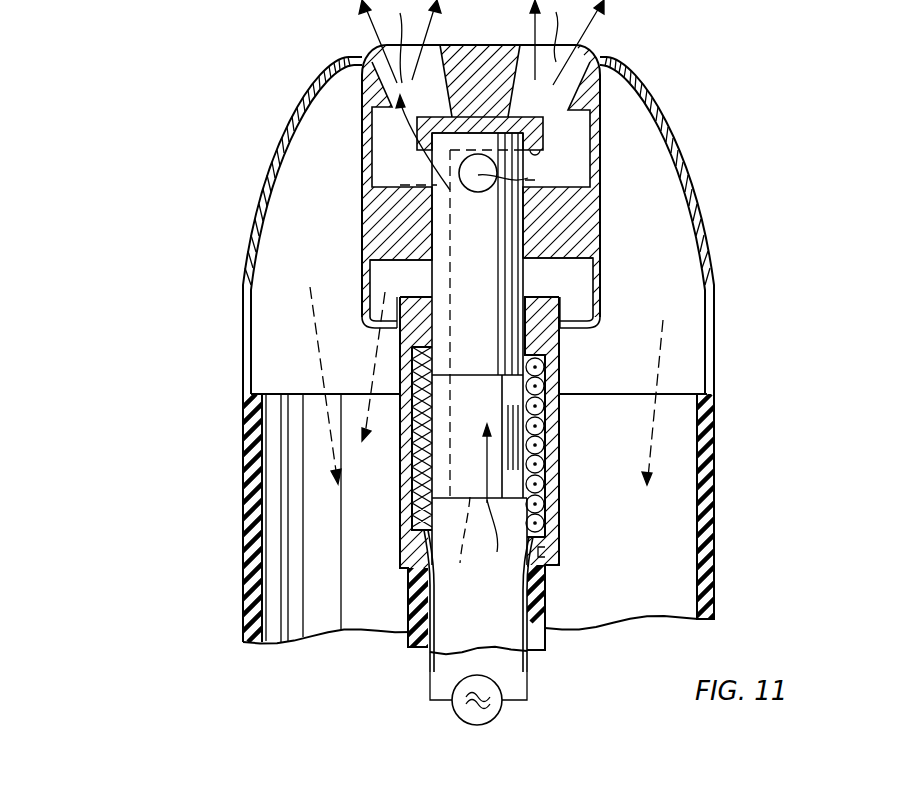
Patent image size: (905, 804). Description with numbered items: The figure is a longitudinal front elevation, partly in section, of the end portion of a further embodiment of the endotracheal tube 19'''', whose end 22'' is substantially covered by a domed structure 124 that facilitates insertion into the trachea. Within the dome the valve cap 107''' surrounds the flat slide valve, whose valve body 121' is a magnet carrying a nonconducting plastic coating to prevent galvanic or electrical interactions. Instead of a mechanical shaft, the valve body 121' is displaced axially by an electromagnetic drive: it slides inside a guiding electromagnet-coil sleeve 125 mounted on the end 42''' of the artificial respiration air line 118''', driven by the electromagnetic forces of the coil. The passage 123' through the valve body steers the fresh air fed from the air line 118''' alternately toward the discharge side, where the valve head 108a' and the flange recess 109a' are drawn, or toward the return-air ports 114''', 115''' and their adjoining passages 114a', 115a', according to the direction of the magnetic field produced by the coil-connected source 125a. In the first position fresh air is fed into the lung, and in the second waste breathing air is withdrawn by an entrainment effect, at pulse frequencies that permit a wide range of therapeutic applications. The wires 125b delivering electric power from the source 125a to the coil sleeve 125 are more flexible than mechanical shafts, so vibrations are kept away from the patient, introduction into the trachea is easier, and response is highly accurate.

The valve cap body 107''' is at (521, 181).
The valve head 108a' is at (481, 111).
The flange recess 109a' is at (604, 148).
The return-air port 114''' is at (362, 338).
The left air passage 114a' is at (364, 288).
The return-air port 115''' is at (601, 342).
The right air passage 115a' is at (604, 288).
The artificial respiration air line 118''' is at (520, 473).
The valve body 121' is at (529, 349).
The passage 123' is at (486, 373).
The domed structure 124 is at (704, 213).
The electromagnet-coil sleeve 125 is at (541, 488).
The coil-connected source 125a is at (502, 708).
The wires 125b is at (478, 665).
The end of the endotracheal tube 42''' is at (580, 565).
The end of the endotracheal tube 22'' is at (674, 507).
The endotracheal tube 19'''' is at (520, 518).